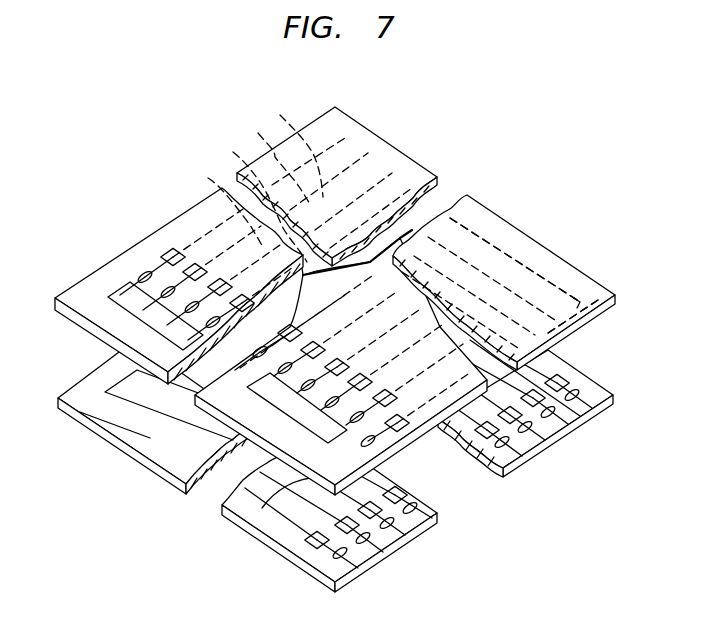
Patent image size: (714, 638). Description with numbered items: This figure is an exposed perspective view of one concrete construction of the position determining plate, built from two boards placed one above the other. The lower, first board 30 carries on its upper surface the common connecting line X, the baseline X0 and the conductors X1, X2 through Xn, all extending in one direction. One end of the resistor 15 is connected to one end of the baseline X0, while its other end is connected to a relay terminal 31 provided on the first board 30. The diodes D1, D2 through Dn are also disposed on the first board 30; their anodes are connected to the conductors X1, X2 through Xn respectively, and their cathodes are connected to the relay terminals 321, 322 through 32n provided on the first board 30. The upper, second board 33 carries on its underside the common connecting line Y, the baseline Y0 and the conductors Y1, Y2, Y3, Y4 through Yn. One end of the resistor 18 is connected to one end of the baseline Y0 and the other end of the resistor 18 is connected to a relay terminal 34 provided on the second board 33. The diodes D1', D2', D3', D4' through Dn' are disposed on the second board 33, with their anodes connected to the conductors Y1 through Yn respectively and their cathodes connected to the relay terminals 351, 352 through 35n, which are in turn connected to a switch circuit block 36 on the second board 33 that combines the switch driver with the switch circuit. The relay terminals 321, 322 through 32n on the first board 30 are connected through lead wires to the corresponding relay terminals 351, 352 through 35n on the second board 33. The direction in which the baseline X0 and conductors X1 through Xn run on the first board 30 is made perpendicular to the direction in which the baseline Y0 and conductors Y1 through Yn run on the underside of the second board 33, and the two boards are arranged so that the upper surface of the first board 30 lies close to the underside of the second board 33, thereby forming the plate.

The common connecting line Y is at (390, 148).
The conductor Y1 is at (294, 146).
The conductor Y2 is at (274, 159).
The conductor Y3 is at (259, 197).
The conductor Y4 is at (224, 200).
The conductor Yn is at (577, 277).
The baseline Y0 is at (605, 287).
The second board 33 is at (485, 210).
The common connecting line X is at (112, 384).
The baseline X0 is at (152, 418).
The conductor Xn is at (200, 432).
The conductor X1 is at (575, 364).
The conductor X2 is at (553, 356).
The diode D1 is at (591, 406).
The diode D2 is at (529, 449).
The diode Dn is at (417, 525).
The diode Dn' is at (405, 416).
The diode D1' is at (167, 223).
The diode D2' is at (170, 239).
The diode D3' is at (169, 254).
The diode D4' is at (168, 271).
The relay terminal 321 is at (587, 415).
The relay terminal 322 is at (555, 413).
The relay terminal 32n is at (392, 530).
The relay terminal 31 is at (357, 563).
The first board 30 is at (233, 518).
The relay terminal 34 is at (232, 517).
The resistor 15 is at (303, 548).
The resistor 18 is at (440, 458).
The relay terminal 35n is at (420, 485).
The relay terminal 351 is at (142, 278).
The relay terminal 352 is at (168, 300).
The switch circuit block 36 is at (118, 288).